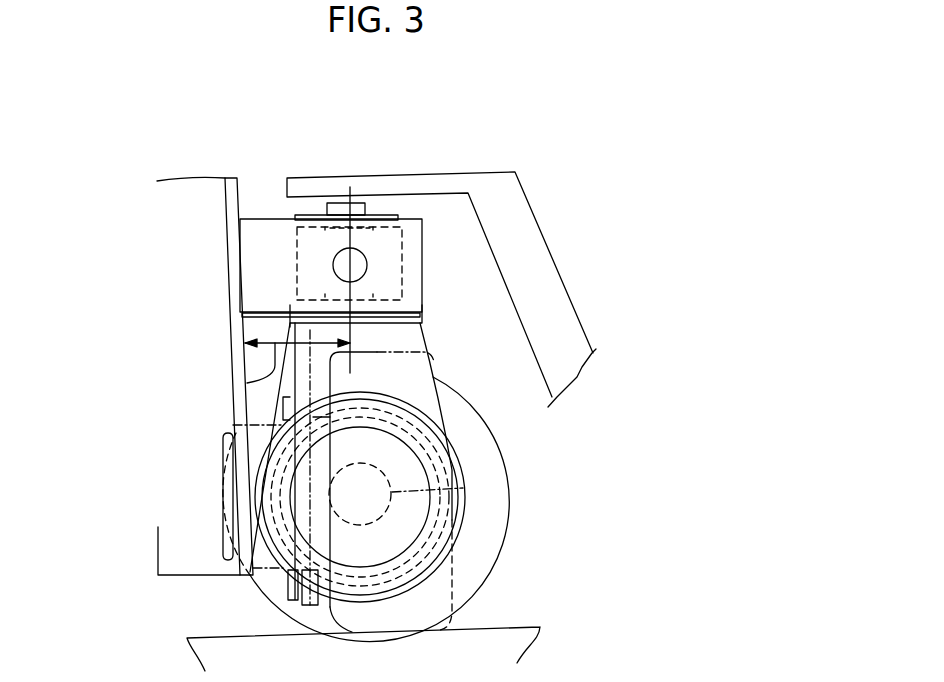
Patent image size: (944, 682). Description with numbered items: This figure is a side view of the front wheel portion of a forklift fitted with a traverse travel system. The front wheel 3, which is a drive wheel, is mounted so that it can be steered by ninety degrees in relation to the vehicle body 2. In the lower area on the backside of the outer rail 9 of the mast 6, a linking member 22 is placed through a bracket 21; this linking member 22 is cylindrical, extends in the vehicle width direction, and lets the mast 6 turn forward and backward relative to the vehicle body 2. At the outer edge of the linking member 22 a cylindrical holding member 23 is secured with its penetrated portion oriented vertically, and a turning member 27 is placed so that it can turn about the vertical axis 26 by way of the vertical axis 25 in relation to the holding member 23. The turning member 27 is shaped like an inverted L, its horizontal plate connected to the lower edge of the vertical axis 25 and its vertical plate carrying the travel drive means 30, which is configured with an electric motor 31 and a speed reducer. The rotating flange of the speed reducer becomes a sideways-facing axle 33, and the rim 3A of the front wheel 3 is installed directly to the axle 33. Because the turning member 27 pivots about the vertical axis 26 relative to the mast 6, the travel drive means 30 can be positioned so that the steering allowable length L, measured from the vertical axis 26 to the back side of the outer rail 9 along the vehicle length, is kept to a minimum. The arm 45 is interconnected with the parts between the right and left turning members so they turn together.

The vehicle body 2 is at (527, 275).
The front wheel 3 is at (468, 550).
The rim 3A is at (418, 517).
The mast 6 is at (192, 179).
The outer rail 9 is at (197, 238).
The bracket 21 is at (260, 282).
The linking member 22 is at (367, 262).
The holding member 23 is at (297, 263).
The vertical axis 25 is at (357, 213).
The vertical axis 26 is at (372, 230).
The turning member 27 is at (413, 313).
The travel drive means 30 is at (452, 458).
The electric motor 31 is at (455, 530).
The axle 33 is at (463, 488).
The arm 45 is at (372, 231).
The steering allowable length L is at (273, 377).